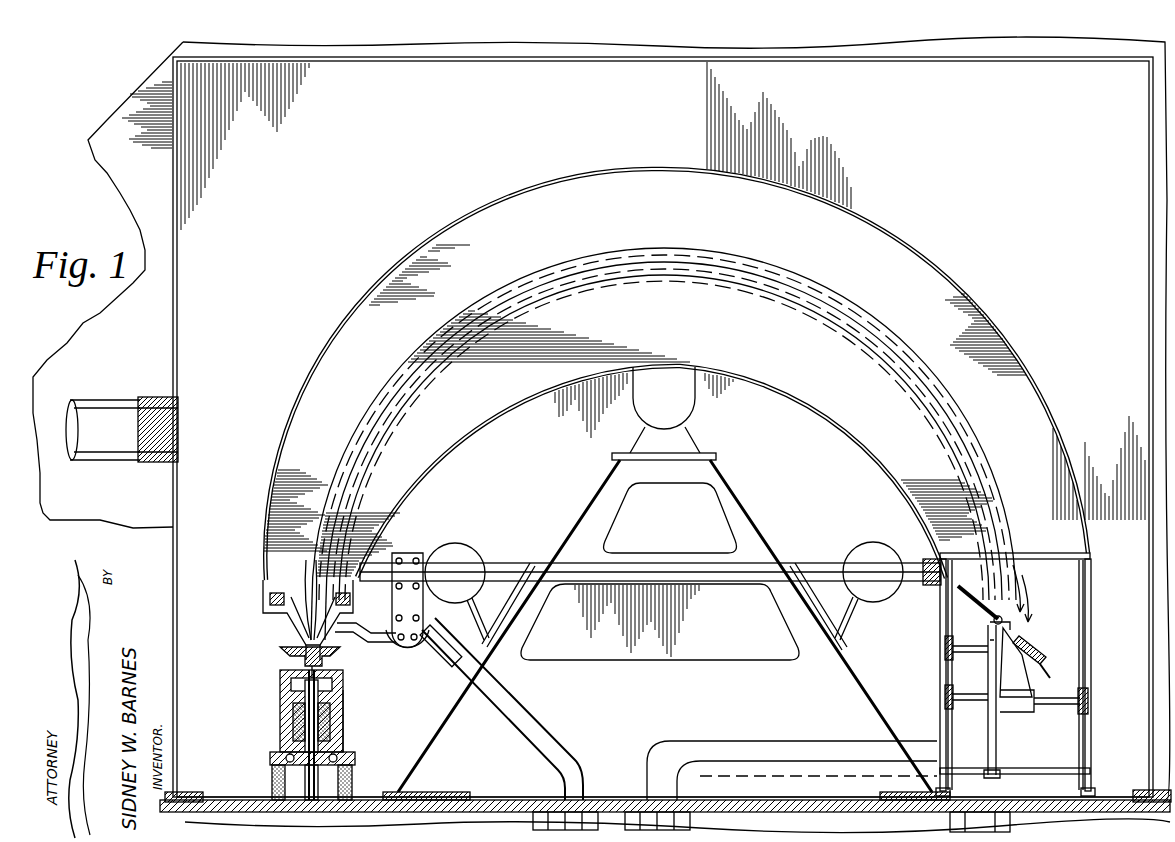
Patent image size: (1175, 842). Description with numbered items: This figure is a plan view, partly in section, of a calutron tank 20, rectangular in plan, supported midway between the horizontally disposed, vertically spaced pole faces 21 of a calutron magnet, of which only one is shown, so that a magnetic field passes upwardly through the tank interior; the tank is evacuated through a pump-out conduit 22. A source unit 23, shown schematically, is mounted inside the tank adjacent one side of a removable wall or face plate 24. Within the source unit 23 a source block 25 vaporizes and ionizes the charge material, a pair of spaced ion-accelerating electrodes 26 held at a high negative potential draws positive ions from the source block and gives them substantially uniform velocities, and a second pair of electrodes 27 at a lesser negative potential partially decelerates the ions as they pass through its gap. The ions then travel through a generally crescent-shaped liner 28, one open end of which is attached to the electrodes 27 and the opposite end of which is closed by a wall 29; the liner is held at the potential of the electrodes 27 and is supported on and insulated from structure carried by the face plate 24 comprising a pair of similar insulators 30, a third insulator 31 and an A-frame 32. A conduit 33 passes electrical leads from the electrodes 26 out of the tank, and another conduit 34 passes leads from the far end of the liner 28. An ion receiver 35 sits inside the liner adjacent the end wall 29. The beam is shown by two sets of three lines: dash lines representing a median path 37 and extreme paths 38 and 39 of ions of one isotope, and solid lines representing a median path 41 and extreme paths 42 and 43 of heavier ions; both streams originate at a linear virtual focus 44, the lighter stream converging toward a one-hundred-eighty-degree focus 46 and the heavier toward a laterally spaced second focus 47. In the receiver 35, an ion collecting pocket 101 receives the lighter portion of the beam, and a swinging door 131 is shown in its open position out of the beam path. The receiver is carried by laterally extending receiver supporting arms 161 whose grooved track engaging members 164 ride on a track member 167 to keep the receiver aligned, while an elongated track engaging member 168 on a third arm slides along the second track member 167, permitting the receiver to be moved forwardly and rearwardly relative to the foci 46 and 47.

The tank 20 is at (175, 334).
The pole faces 21 is at (105, 122).
The pump-out conduit 22 is at (122, 400).
The source unit 23 is at (270, 708).
The face plate 24 is at (255, 800).
The source block 25 is at (343, 705).
The ion-accelerating electrodes 26 is at (280, 655).
The second pair of electrodes 27 is at (270, 618).
The liner 28 is at (1021, 333).
The wall 29 is at (1062, 745).
The insulators 30 is at (462, 545).
The third insulator 31 is at (695, 398).
The A-frame 32 is at (740, 497).
The conduit 33 is at (573, 762).
The conduit 34 is at (778, 741).
The ion receiver 35 is at (1055, 681).
The median path 37 is at (604, 268).
The extreme path 38 is at (645, 278).
The extreme path 39 is at (652, 262).
The median path 41 is at (728, 266).
The extreme path 42 is at (750, 285).
The extreme path 43 is at (772, 270).
The linear virtual focus 44 is at (300, 648).
The 180° focus 46 is at (1026, 612).
The second 180° focus 47 is at (1026, 634).
The ion collecting pocket 101 is at (1040, 662).
The swinging type door 131 is at (956, 612).
The receiver supporting arms 161 is at (960, 703).
The track engaging members 164 is at (946, 650).
The track members 167 is at (946, 678).
The track engaging member 168 is at (1090, 700).